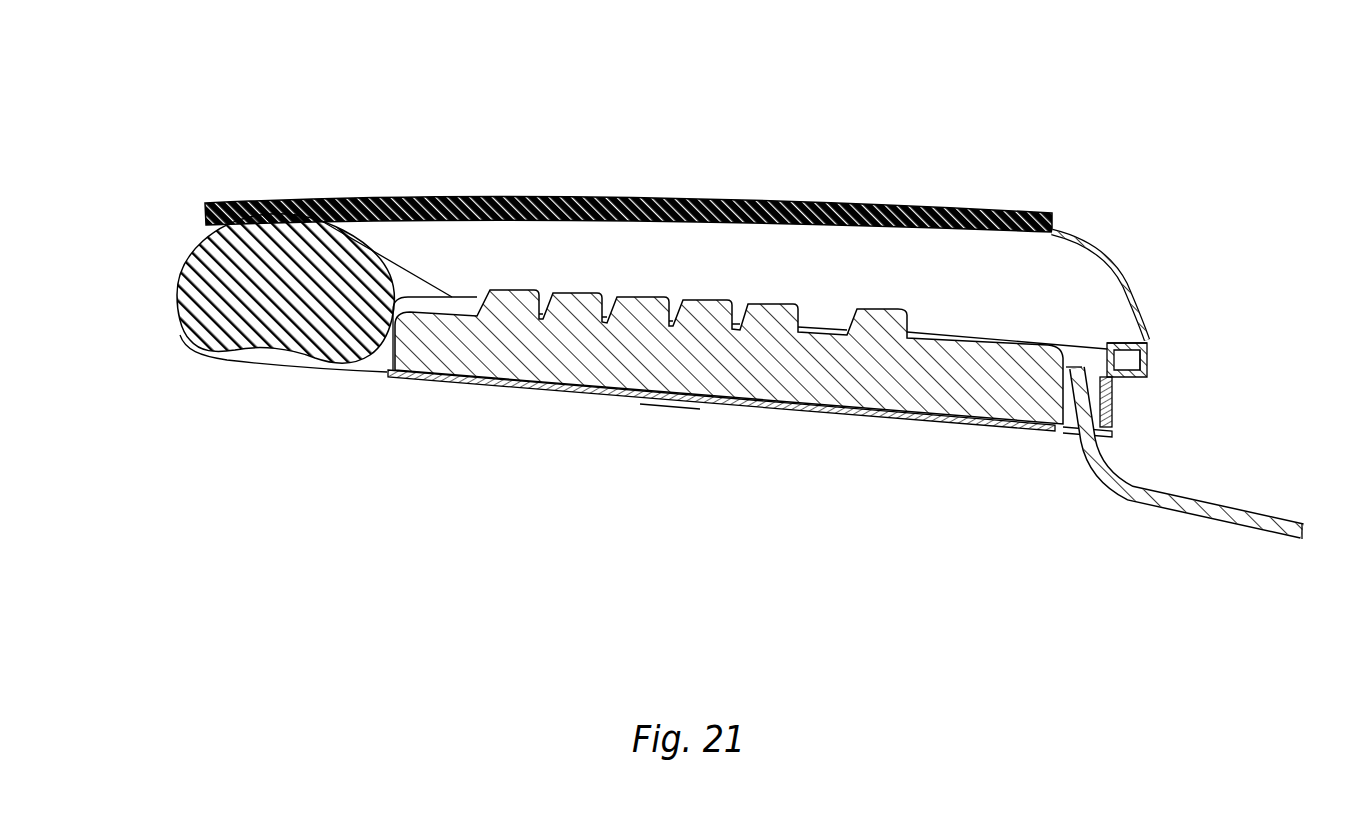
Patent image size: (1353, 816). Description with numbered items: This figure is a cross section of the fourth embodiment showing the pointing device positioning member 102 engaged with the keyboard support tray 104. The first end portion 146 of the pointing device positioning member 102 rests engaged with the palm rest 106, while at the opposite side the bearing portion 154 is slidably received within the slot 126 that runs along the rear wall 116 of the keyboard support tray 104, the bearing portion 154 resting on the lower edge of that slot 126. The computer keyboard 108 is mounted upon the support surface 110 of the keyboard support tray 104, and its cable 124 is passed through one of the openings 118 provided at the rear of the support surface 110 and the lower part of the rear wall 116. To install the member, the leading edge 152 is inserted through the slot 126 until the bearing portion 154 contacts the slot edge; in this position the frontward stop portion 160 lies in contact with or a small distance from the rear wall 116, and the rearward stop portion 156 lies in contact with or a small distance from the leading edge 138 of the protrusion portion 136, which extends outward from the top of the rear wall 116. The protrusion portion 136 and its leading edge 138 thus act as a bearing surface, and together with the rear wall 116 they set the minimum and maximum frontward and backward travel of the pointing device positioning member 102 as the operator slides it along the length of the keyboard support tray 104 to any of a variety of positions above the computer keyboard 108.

The pointing device positioning member 102 is at (1093, 226).
The keyboard support tray 104 is at (818, 428).
The palm rest 106 is at (180, 335).
The computer keyboard 108 is at (487, 383).
The support surface 110 is at (667, 400).
The rear wall 116 is at (1122, 428).
The openings 118 is at (1057, 432).
The cable 124 is at (1272, 545).
The slot 126 is at (1090, 347).
The protrusion portion 136 is at (1127, 345).
The leading edge 138 is at (1140, 318).
The first end portion 146 is at (260, 196).
The leading edge 152 is at (1138, 470).
The bearing portion 154 is at (1115, 392).
The rearward stop portion 156 is at (1152, 362).
The frontward stop portion 160 is at (1073, 435).